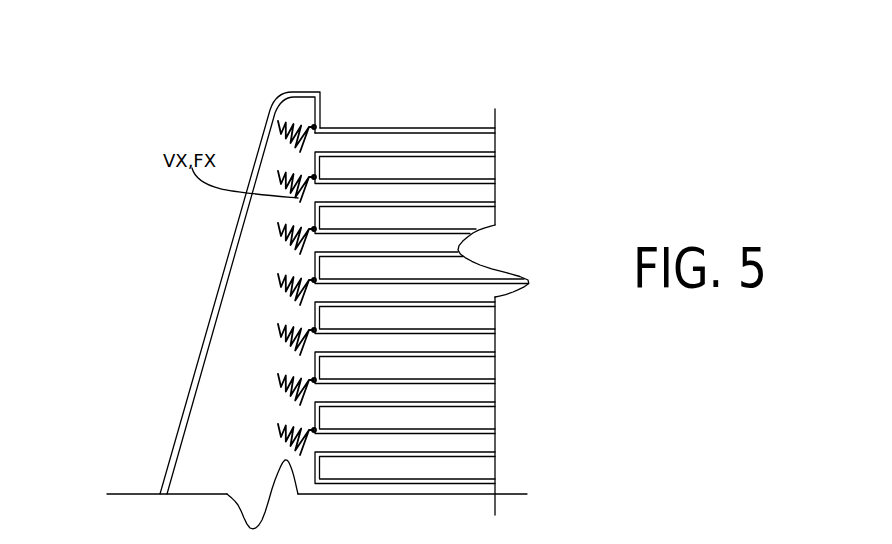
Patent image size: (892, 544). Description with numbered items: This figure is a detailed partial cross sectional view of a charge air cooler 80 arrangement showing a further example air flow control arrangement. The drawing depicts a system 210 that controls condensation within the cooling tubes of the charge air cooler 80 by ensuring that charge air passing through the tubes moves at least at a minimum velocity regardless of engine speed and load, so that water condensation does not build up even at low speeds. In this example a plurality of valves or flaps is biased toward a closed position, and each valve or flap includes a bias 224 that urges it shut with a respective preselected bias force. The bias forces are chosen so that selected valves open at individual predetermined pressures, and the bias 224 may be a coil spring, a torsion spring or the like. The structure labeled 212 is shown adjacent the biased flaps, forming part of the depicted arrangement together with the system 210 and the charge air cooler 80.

The charge air cooler 80 is at (729, 73).
The system 210 is at (564, 91).
The angled wall with cover 212 is at (97, 72).
The bias 224 is at (278, 178).